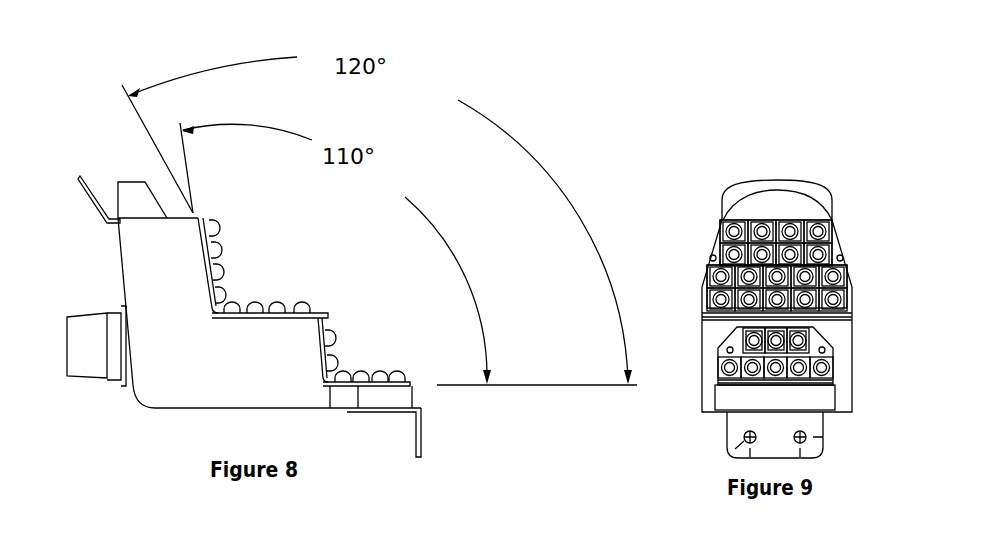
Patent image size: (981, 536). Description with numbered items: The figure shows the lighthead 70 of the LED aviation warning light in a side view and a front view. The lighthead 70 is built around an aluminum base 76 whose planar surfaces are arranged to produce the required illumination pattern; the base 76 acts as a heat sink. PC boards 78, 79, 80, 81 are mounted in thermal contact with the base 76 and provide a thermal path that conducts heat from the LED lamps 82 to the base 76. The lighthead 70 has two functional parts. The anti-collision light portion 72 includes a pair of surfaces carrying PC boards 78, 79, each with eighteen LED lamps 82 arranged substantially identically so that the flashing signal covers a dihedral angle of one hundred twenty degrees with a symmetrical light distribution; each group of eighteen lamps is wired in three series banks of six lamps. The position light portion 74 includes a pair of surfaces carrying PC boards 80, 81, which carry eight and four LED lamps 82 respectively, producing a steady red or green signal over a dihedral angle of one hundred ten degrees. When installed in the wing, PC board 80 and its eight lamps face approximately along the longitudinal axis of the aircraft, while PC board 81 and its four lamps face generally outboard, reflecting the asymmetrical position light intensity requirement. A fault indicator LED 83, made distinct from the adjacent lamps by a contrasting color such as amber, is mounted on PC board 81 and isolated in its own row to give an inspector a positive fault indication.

In FIG. 8, the lighthead 70 is at (126, 410).
In FIG. 9, the lighthead 70 is at (841, 209).
In FIG. 8, the anti-collision light portion 72 is at (222, 217).
In FIG. 8, the position light portion 74 is at (403, 365).
In FIG. 8, the aluminum base 76 is at (190, 381).
In FIG. 9, the aluminum base 76 is at (785, 215).
In FIG. 8, the PC board 78 is at (200, 268).
In FIG. 9, the PC board 78 is at (708, 250).
In FIG. 8, the PC board 79 is at (240, 318).
In FIG. 8, the PC board 80 is at (318, 350).
In FIG. 9, the PC board 80 is at (730, 338).
In FIG. 8, the PC board 81 is at (360, 415).
In FIG. 9, the LED lamps 82 is at (722, 222).
In FIG. 8, the fault indicator LED 83 is at (395, 372).